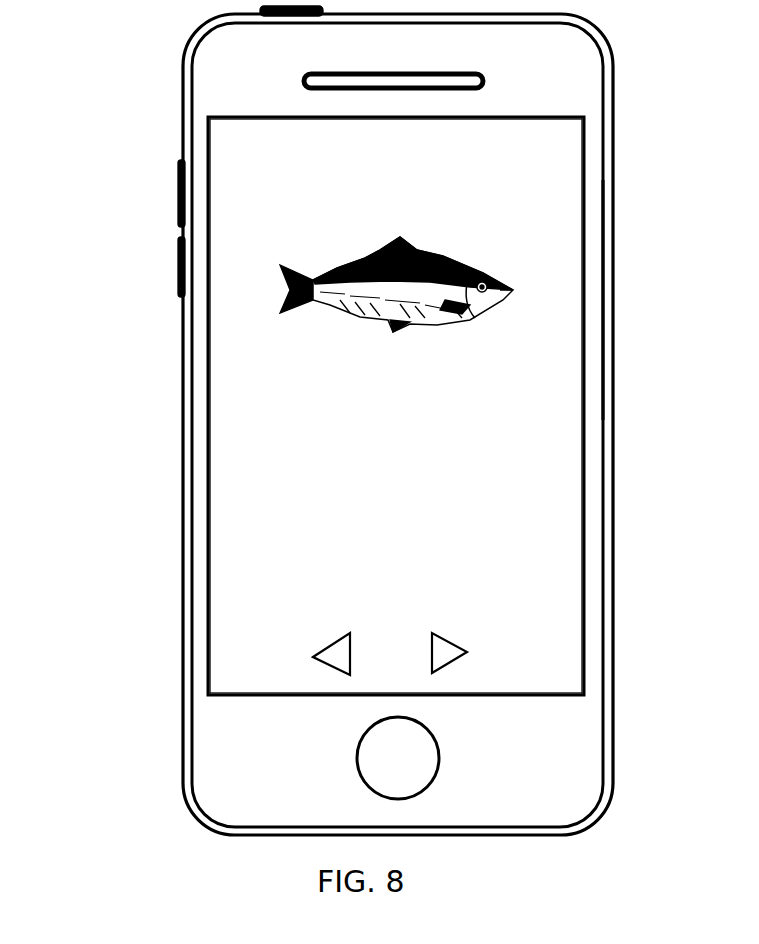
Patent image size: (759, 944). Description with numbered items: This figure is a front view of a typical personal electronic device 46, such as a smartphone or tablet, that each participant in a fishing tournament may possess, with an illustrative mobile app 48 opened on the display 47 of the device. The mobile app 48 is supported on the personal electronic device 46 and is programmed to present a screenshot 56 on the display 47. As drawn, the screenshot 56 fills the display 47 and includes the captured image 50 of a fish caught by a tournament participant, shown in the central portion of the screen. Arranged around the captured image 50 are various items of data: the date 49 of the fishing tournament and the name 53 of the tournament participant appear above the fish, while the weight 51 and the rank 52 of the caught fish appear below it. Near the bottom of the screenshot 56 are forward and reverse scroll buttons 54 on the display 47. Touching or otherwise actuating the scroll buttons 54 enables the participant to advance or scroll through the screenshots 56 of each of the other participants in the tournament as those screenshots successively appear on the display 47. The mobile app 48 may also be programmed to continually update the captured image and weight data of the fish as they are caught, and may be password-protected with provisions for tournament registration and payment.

The personal electronic device 46 is at (612, 199).
The display 47 is at (536, 390).
The mobile app 48 is at (604, 331).
The date 49 is at (245, 163).
The captured image 50 is at (315, 308).
The weight 51 is at (264, 468).
The rank 52 is at (275, 598).
The name 53 is at (278, 210).
The forward and reverse scroll buttons 54 is at (351, 638).
The screenshot 56 is at (537, 166).